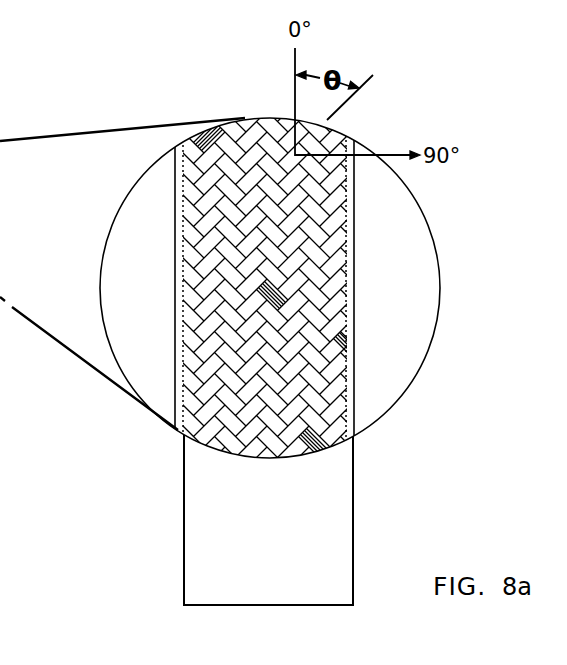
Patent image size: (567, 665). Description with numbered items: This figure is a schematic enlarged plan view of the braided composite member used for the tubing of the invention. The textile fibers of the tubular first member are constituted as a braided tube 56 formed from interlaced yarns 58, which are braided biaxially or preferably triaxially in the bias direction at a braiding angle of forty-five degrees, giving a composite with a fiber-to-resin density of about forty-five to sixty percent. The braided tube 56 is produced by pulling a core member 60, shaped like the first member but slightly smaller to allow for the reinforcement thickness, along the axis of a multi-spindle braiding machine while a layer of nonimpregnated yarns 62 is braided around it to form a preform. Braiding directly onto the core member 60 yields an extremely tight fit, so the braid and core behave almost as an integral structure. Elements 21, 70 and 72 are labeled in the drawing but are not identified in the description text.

The braided tube 56 is at (255, 118).
The yarns 58 is at (207, 122).
The cable 21 is at (177, 230).
The nonimpregnated yarns 62 is at (185, 383).
The braid edge 70 is at (355, 279).
The braid edge stitching 72 is at (355, 325).
The core member 60 is at (200, 505).